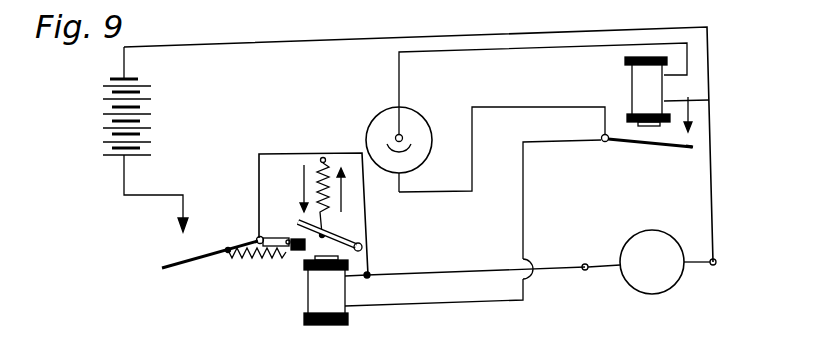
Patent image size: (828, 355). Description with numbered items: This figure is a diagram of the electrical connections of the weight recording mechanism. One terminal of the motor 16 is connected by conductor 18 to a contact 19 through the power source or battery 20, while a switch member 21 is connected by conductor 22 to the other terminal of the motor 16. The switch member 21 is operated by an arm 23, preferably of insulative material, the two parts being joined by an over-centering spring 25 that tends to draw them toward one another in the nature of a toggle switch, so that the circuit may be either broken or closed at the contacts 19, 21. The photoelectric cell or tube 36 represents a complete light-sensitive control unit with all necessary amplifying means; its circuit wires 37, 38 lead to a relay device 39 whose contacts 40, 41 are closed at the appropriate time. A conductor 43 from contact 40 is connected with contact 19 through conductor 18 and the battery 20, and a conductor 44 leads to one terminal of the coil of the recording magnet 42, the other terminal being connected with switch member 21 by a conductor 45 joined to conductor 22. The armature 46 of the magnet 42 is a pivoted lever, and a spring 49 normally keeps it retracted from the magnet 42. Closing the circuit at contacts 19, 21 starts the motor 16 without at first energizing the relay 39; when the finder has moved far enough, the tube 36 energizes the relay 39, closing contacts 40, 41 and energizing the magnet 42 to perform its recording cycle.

The motor 16 is at (629, 285).
The conductor 18 is at (722, 156).
The contact 19 is at (179, 227).
The power source 20 is at (150, 92).
The switch member 21 is at (199, 262).
The conductor 22 is at (258, 178).
The arm 23 is at (298, 252).
The over-centering spring 25 is at (243, 260).
The photoelectric cell 36 is at (381, 118).
The circuit wire 37 is at (531, 107).
The circuit wire 38 is at (487, 50).
The relay device 39 is at (667, 91).
The contact 40 is at (693, 140).
The contact 41 is at (650, 149).
The magnet 42 is at (326, 290).
The conductor 43 is at (682, 106).
The conductor 44 is at (523, 192).
The conductor 45 is at (410, 276).
The armature 46 is at (348, 234).
The spring 49 is at (322, 160).